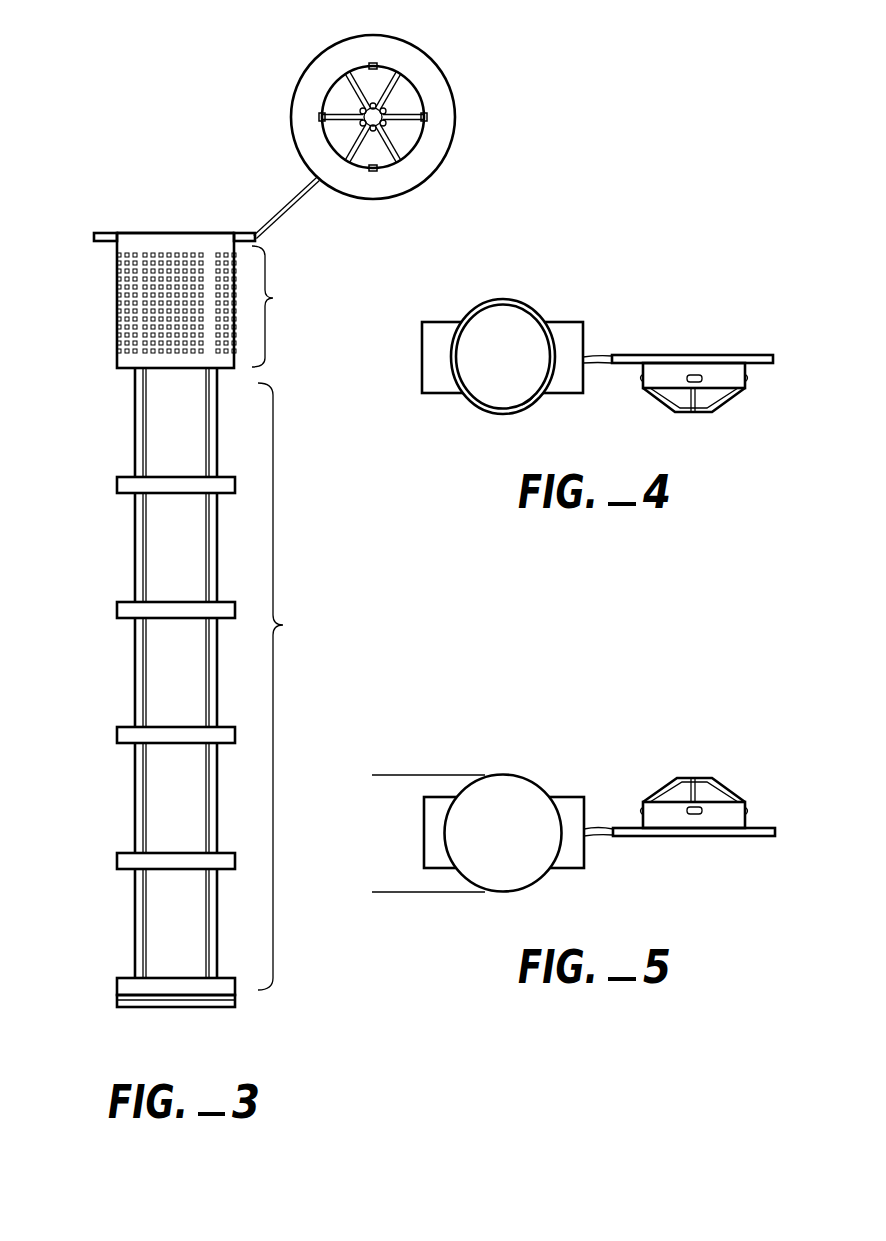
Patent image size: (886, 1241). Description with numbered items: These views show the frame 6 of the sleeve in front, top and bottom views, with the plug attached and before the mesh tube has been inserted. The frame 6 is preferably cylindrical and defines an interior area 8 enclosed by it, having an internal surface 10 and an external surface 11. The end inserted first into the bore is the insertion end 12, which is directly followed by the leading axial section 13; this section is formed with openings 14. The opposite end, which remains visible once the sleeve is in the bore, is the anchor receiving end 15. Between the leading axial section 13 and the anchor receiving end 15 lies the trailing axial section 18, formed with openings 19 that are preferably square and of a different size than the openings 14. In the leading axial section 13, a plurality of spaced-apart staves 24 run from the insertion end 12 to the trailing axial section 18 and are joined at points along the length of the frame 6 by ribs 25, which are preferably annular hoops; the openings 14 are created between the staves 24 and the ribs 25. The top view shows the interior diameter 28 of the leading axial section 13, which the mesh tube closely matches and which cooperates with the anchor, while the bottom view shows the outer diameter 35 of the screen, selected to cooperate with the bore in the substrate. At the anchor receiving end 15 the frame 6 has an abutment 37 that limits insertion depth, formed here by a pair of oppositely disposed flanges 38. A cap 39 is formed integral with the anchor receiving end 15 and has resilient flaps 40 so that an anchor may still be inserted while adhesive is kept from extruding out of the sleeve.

In FIG. 3, the frame 6 is at (245, 372).
In FIG. 4, the frame 6 is at (515, 344).
In FIG. 3, the interior area 8 is at (188, 425).
In FIG. 4, the interior area 8 is at (477, 383).
In FIG. 4, the internal surface 10 is at (528, 401).
In FIG. 3, the external surface 11 is at (155, 279).
In FIG. 4, the external surface 11 is at (500, 300).
In FIG. 5, the external surface 11 is at (503, 833).
In FIG. 3, the insertion end 12 is at (237, 993).
In FIG. 3, the leading axial section 13 is at (184, 679).
In FIG. 3, the openings 14 is at (172, 555).
In FIG. 3, the anchor receiving end 15 is at (135, 232).
In FIG. 3, the trailing axial section 18 is at (282, 306).
In FIG. 3, the openings 19 is at (162, 255).
In FIG. 3, the staves 24 is at (136, 448).
In FIG. 3, the ribs 25 is at (117, 363).
In FIG. 4, the interior diameter 28 is at (503, 316).
In FIG. 5, the outer diameter 35 is at (382, 784).
In FIG. 3, the abutment 37 is at (255, 237).
In FIG. 4, the abutment 37 is at (597, 359).
In FIG. 5, the abutment 37 is at (440, 870).
In FIG. 3, the flanges 38 is at (94, 237).
In FIG. 4, the flanges 38 is at (422, 340).
In FIG. 5, the flanges 38 is at (440, 797).
In FIG. 3, the cap 39 is at (330, 50).
In FIG. 4, the cap 39 is at (768, 355).
In FIG. 5, the cap 39 is at (720, 840).
In FIG. 3, the resilient flaps 40 is at (377, 160).